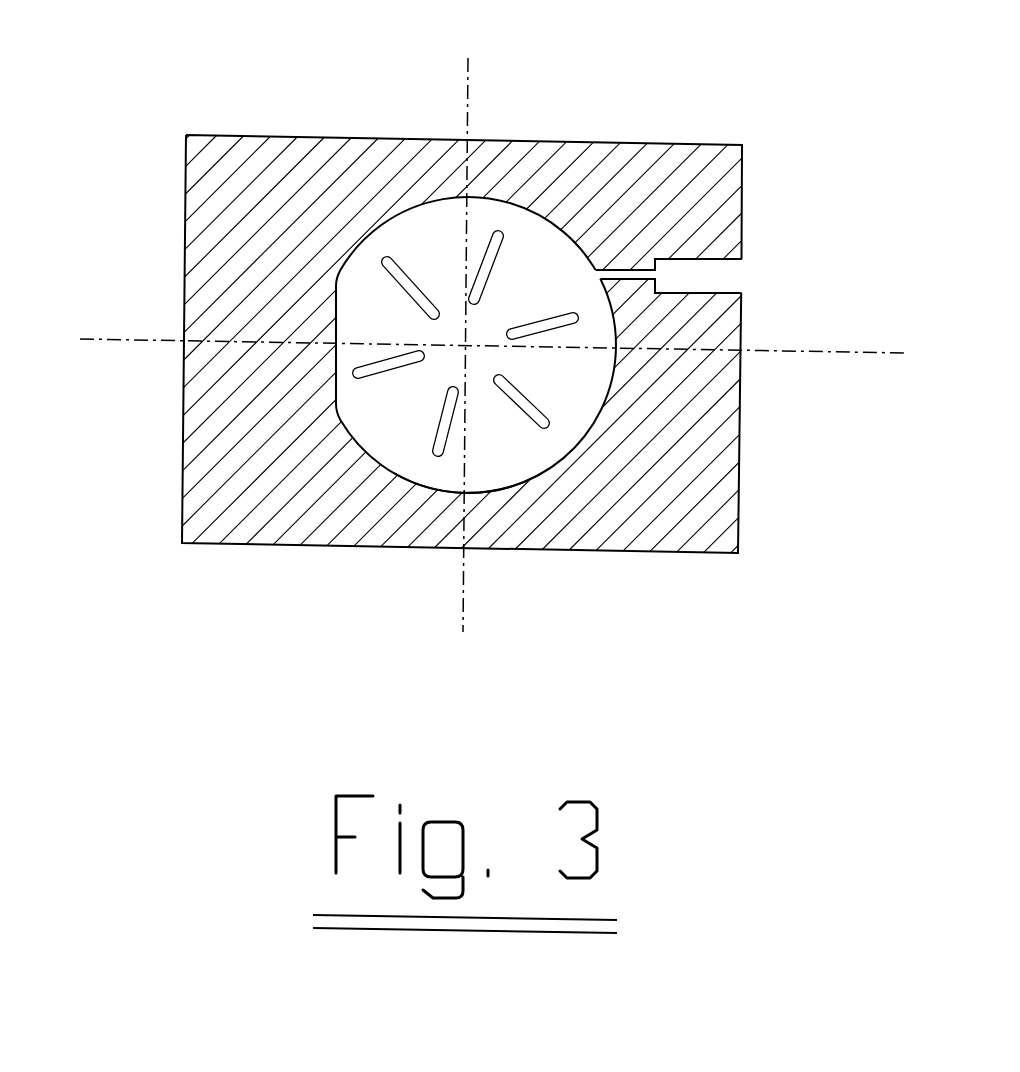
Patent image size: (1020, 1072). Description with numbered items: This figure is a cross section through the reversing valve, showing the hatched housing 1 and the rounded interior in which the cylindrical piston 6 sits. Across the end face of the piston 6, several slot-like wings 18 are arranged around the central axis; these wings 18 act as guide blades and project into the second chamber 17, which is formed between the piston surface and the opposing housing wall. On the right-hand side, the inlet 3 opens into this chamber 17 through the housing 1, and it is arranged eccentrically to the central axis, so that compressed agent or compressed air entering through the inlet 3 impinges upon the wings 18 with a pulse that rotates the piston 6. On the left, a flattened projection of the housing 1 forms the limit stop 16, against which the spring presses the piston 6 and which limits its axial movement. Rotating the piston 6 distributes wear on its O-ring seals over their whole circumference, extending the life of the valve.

The housing 1 is at (247, 163).
The inlet 3 is at (715, 276).
The piston 6 is at (442, 240).
The limit stop 16 is at (338, 291).
The second chamber 17 is at (503, 484).
The wings 18 is at (438, 430).